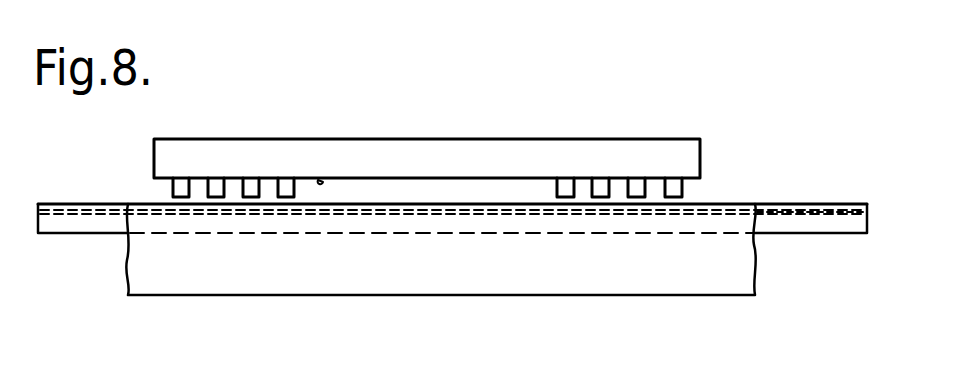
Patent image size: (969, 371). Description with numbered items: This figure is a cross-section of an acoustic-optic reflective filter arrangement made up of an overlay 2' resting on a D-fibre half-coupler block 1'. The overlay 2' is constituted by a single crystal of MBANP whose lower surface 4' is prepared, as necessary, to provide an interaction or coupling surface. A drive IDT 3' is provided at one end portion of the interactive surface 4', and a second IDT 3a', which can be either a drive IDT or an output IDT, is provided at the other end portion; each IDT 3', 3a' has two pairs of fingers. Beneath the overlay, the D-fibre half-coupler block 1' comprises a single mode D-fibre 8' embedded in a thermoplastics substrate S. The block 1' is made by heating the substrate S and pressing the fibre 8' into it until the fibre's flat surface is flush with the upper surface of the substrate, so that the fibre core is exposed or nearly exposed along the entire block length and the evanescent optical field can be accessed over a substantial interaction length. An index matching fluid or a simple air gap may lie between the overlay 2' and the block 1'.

The D-fibre half-coupler block 1' is at (772, 322).
The overlay 2' is at (427, 134).
The drive IDT 3' is at (188, 185).
The second IDT 3a' is at (667, 185).
The lower surface 4' is at (342, 137).
The single mode D-fibre 8' is at (811, 248).
The thermoplastics substrate S is at (243, 283).